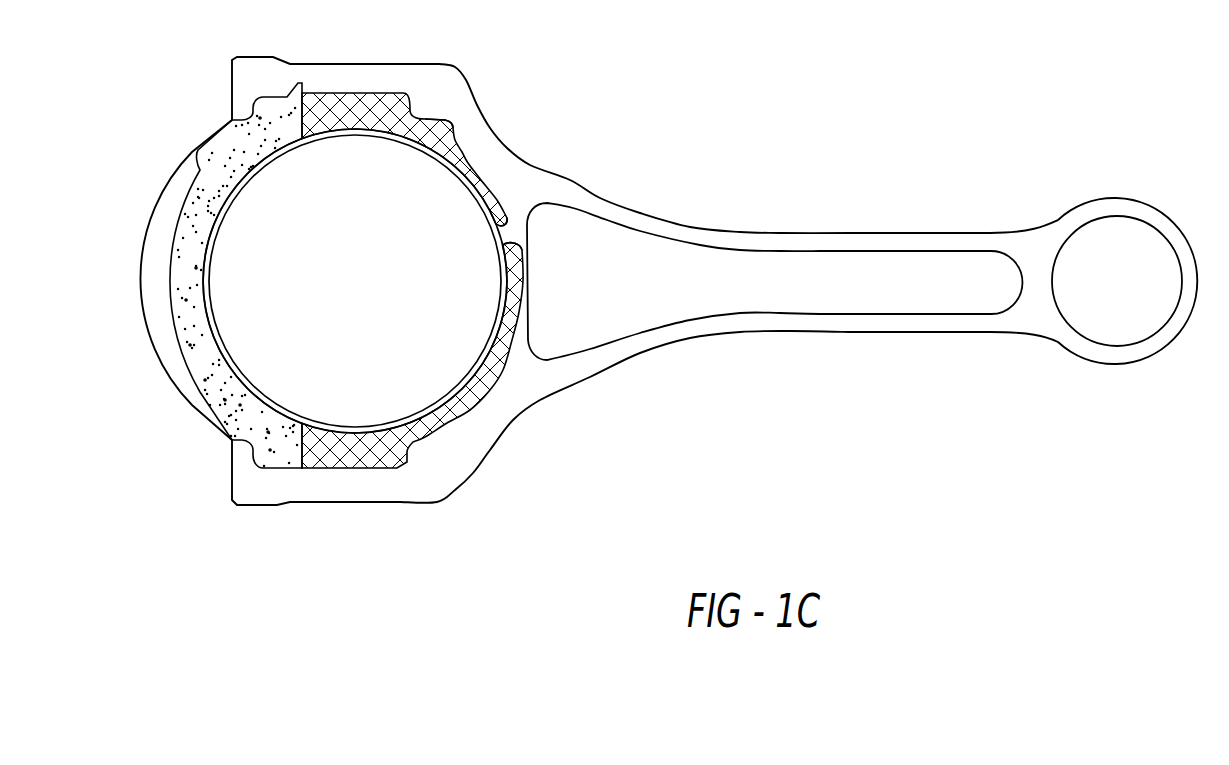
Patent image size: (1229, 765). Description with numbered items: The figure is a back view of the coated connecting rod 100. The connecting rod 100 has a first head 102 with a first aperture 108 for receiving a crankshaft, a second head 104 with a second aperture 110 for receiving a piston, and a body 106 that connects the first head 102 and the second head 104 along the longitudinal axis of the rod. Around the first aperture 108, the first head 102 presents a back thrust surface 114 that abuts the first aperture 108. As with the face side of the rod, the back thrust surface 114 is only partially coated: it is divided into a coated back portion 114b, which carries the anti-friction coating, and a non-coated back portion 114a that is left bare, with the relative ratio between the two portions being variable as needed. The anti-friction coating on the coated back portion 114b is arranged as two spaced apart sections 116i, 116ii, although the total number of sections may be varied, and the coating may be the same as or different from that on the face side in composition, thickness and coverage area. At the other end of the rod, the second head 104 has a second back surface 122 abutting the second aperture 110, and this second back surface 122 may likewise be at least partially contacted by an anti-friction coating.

The connecting rod 100 is at (962, 141).
The first head 102 is at (503, 488).
The second head 104 is at (1137, 377).
The body 106 is at (848, 218).
The first aperture 108 is at (361, 311).
The second aperture 110 is at (1134, 300).
The back thrust surface 114 is at (283, 112).
The non-coated back portion 114a is at (230, 153).
The coated back portion 114b is at (443, 127).
The first section of anti-friction coating 116i is at (500, 203).
The second section of anti-friction coating 116ii is at (513, 256).
The second back surface 122 is at (1155, 218).